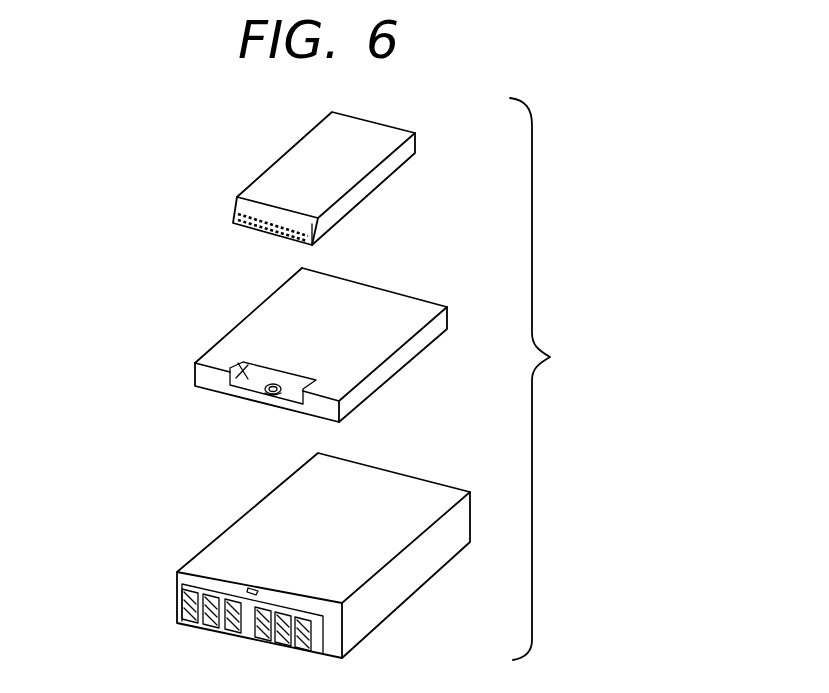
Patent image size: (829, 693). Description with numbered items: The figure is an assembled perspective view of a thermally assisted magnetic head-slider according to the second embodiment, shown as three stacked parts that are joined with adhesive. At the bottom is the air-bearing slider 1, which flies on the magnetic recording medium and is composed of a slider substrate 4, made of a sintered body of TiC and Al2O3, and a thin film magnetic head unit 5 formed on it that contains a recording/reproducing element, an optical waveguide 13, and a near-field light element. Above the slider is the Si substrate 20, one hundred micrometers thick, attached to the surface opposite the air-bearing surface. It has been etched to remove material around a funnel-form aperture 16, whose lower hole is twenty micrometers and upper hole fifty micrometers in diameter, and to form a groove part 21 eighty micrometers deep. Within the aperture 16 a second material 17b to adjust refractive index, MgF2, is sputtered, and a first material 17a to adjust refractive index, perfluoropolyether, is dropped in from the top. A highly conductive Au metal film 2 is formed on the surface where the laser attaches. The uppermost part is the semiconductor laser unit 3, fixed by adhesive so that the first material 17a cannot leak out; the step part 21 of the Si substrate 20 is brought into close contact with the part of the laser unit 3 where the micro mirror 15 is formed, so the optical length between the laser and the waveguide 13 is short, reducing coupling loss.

The air-bearing slider 1 is at (450, 535).
The metal film 2 is at (407, 332).
The semiconductor laser unit 3 is at (380, 147).
The slider substrate 4 is at (428, 573).
The thin film magnetic head unit 5 is at (335, 642).
The optical waveguide 13 is at (250, 592).
The micro mirror 15 is at (235, 213).
The funnel-form aperture 16 is at (277, 393).
The first material to adjust refractive index 17a is at (268, 392).
The second material to adjust refractive index 17b is at (271, 384).
The Si substrate 20 is at (398, 367).
The groove part (step part) 21 is at (205, 358).